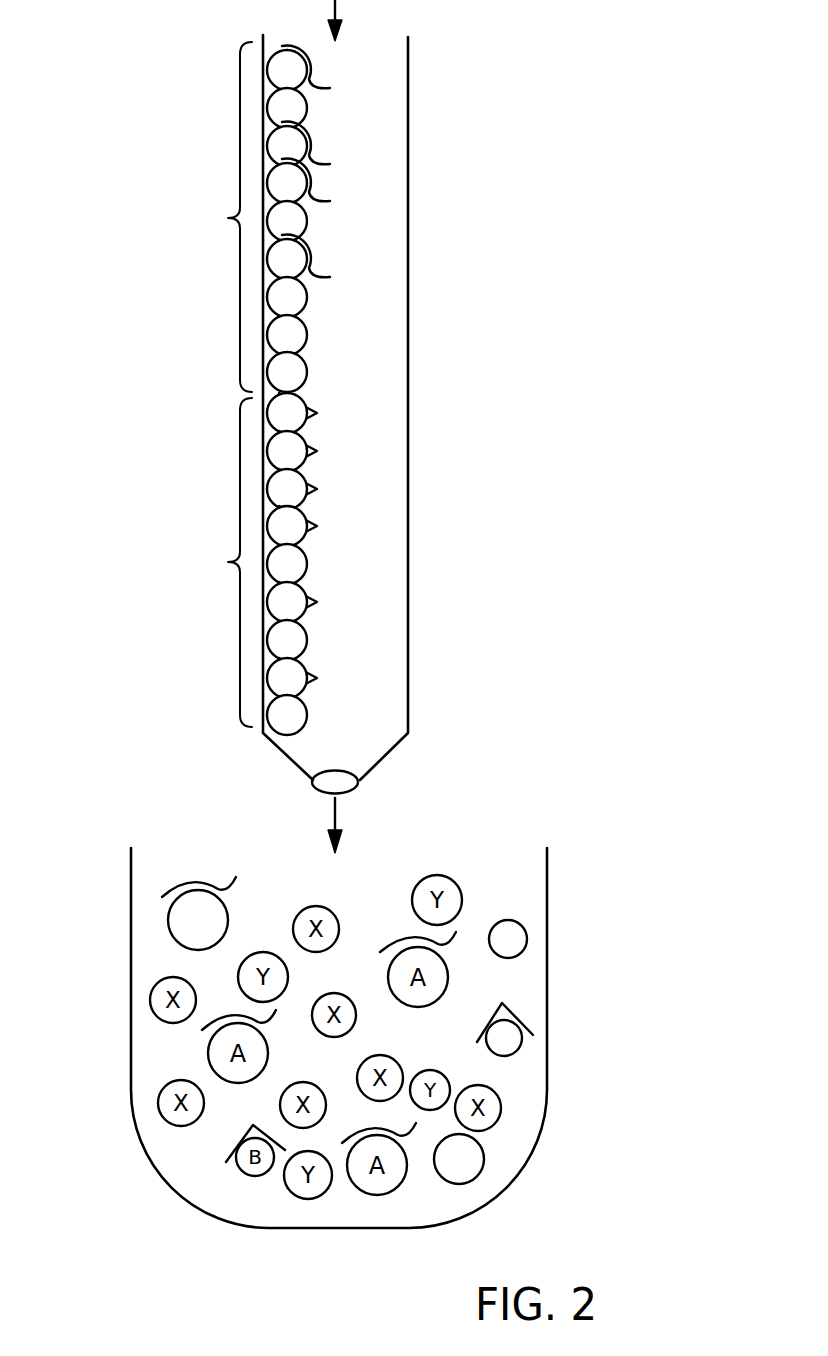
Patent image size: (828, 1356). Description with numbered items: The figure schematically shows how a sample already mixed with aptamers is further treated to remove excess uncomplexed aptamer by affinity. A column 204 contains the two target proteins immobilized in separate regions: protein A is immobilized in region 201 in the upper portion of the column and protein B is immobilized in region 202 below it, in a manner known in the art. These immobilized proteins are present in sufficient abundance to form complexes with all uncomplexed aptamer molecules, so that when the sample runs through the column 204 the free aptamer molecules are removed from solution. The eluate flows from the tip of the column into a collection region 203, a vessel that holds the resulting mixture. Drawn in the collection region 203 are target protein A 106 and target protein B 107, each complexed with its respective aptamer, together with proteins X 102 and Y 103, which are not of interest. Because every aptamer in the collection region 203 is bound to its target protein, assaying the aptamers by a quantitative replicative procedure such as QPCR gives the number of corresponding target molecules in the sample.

The region of immobilized target protein A 201 is at (228, 218).
The region of immobilized target protein B 202 is at (228, 562).
The column 204 is at (408, 380).
The collection region 203 is at (130, 1068).
The target protein A 106 is at (168, 927).
The protein X 102 is at (528, 930).
The target protein B 107 is at (522, 1041).
The protein Y 103 is at (484, 1160).